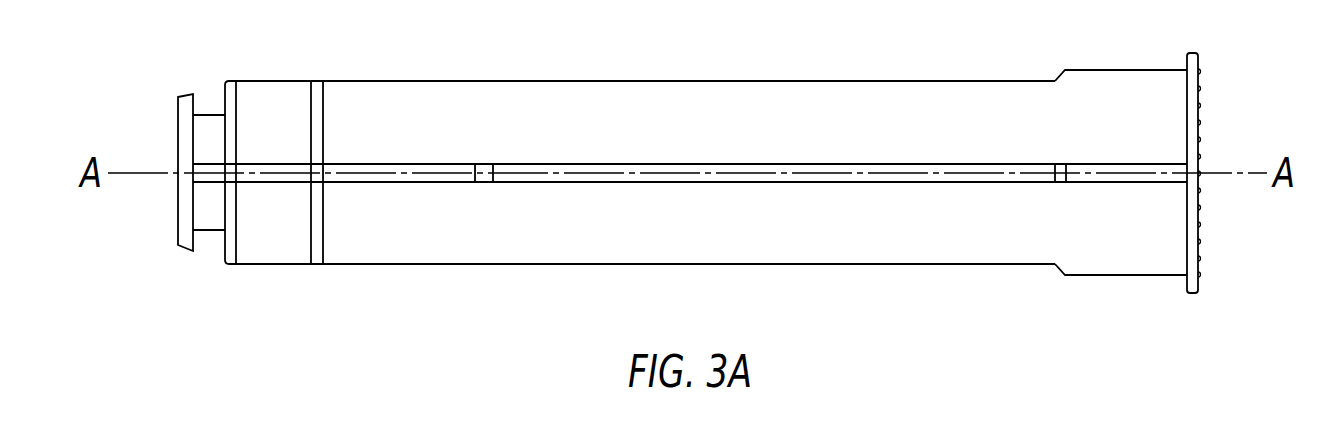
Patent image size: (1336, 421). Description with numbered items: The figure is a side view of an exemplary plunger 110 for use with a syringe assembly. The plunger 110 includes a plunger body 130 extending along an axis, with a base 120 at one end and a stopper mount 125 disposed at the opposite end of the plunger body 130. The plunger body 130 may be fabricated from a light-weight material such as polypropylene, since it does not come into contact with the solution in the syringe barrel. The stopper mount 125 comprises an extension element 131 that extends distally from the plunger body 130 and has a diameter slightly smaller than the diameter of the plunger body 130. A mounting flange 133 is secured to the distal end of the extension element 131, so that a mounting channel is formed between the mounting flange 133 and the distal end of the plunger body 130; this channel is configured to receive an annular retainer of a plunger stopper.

The plunger 110 is at (447, 77).
The base 120 is at (1192, 53).
The stopper mount 125 is at (161, 133).
The plunger body 130 is at (565, 105).
The extension element 131 is at (210, 127).
The mounting flange 133 is at (185, 242).